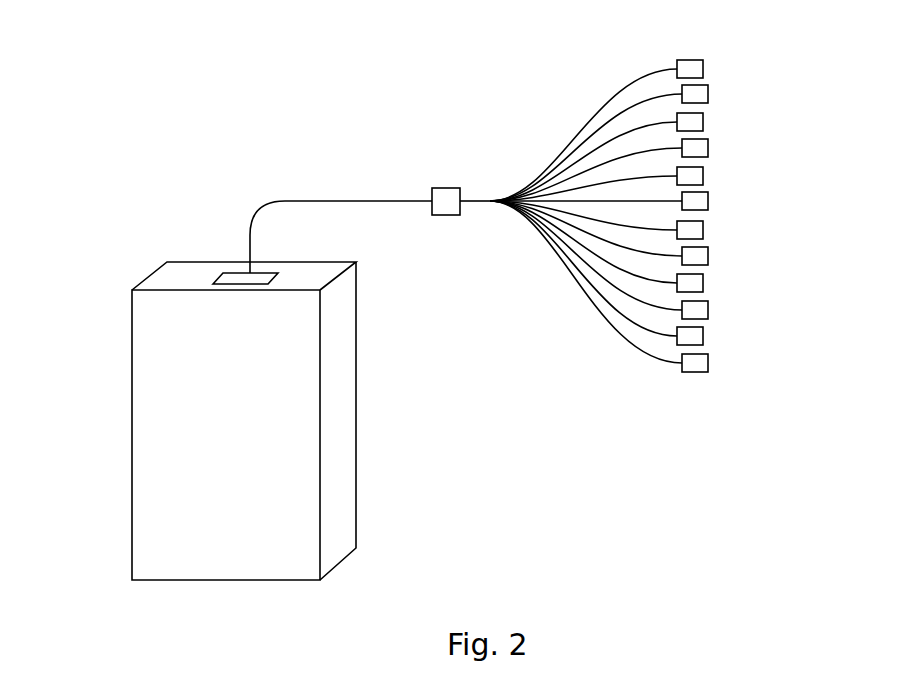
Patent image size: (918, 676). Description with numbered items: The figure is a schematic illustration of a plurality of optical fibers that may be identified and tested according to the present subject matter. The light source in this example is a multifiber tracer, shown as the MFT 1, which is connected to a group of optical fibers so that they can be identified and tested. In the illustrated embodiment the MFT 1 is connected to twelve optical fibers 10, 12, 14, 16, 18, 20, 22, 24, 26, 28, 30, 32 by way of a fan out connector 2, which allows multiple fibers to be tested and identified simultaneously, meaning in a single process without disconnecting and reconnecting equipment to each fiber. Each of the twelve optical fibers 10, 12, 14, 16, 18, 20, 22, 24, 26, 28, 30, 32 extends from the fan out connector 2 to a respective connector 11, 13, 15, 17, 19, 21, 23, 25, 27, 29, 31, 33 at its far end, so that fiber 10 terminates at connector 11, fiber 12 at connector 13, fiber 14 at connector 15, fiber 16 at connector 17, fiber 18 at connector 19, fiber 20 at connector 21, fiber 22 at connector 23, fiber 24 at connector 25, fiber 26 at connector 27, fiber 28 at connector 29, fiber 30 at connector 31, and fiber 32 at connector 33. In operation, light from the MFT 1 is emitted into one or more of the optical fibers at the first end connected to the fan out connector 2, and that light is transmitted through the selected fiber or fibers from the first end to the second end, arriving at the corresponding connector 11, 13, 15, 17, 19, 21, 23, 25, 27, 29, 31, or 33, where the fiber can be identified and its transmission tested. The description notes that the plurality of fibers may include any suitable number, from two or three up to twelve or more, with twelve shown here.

The multifiber tracer 1 is at (132, 528).
The fan out connector 2 is at (445, 188).
The optical fiber 10 is at (638, 70).
The connector 11 is at (696, 70).
The optical fiber 12 is at (620, 105).
The connector 13 is at (700, 95).
The optical fiber 14 is at (592, 138).
The connector 15 is at (696, 122).
The optical fiber 16 is at (578, 162).
The connector 17 is at (700, 148).
The optical fiber 18 is at (573, 195).
The connector 19 is at (696, 176).
The optical fiber 20 is at (553, 224).
The connector 21 is at (700, 201).
The optical fiber 22 is at (572, 250).
The connector 23 is at (696, 230).
The optical fiber 24 is at (598, 268).
The connector 25 is at (700, 256).
The optical fiber 26 is at (615, 290).
The connector 27 is at (696, 283).
The optical fiber 28 is at (630, 310).
The connector 29 is at (700, 310).
The optical fiber 30 is at (643, 333).
The connector 31 is at (696, 336).
The optical fiber 32 is at (643, 360).
The connector 33 is at (700, 363).